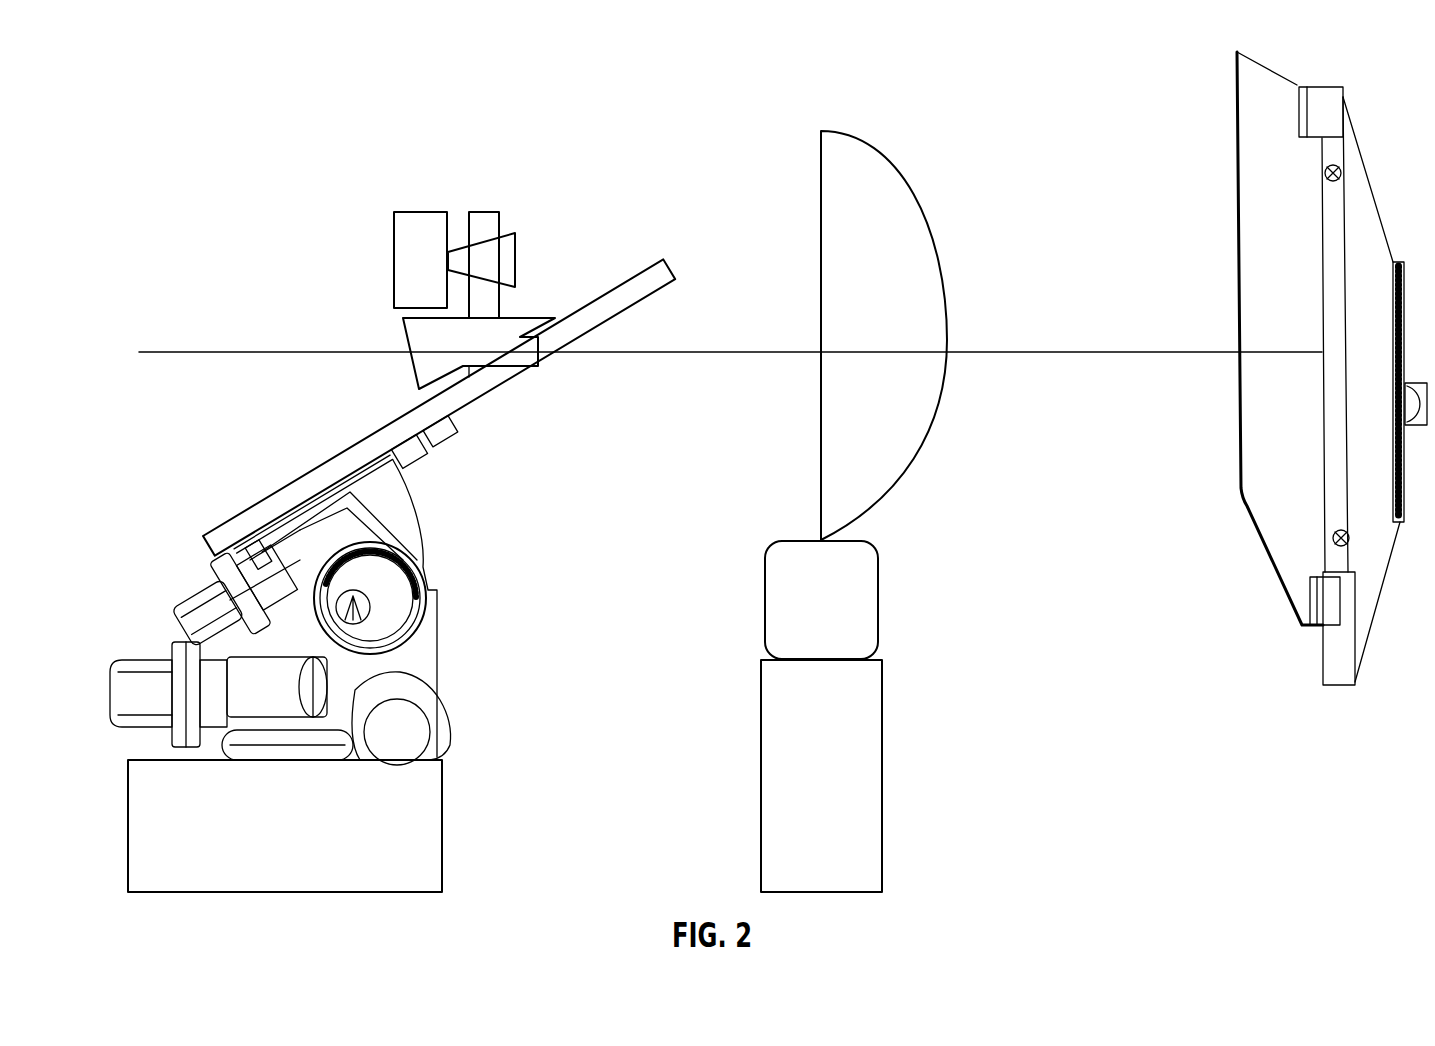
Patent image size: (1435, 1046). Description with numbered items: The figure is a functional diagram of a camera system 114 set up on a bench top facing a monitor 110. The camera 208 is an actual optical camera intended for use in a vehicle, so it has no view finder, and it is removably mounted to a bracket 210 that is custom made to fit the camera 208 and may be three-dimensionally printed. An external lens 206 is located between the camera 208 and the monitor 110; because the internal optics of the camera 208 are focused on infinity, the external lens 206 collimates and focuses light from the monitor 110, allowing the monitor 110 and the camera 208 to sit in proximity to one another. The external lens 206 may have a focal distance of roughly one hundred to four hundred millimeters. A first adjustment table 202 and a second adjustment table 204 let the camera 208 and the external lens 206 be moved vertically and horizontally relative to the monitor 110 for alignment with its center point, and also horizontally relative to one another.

The camera system 114 is at (219, 115).
The monitor 110 is at (1237, 142).
The first adjustment table 202 is at (427, 825).
The second adjustment table 204 is at (867, 825).
The external lens 206 is at (915, 263).
The camera 208 is at (394, 262).
The bracket 210 is at (492, 230).